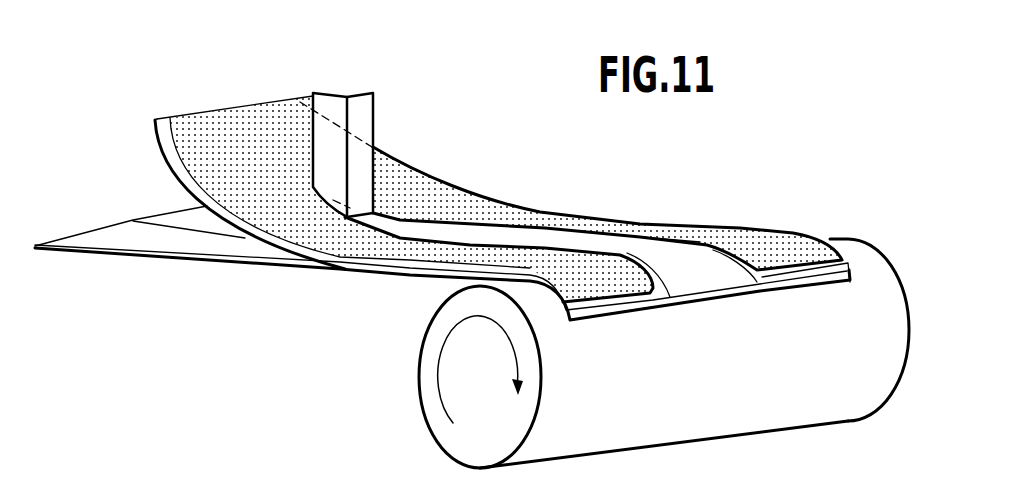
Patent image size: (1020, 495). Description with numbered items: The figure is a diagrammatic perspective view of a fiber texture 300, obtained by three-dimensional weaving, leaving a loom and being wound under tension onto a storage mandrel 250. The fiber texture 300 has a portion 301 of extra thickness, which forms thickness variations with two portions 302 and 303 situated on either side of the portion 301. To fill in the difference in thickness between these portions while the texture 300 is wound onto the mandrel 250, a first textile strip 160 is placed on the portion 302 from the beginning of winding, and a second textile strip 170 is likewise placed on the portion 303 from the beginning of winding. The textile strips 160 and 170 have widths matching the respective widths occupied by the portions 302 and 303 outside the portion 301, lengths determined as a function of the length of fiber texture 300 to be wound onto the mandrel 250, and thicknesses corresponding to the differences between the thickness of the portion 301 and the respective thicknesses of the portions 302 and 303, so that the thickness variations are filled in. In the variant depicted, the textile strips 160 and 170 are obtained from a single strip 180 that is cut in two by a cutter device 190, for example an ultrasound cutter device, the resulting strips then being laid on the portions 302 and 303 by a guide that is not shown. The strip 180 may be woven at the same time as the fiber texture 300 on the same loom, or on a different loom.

The first textile strip 160 is at (592, 268).
The second textile strip 170 is at (777, 250).
The single strip 180 is at (247, 130).
The cutter device 190 is at (353, 96).
The storage mandrel 250 is at (776, 404).
The fiber texture 300 is at (453, 266).
The portion of extra thickness 301 is at (670, 258).
The portion of the fiber texture 302 is at (612, 307).
The portion of the fiber texture 303 is at (789, 281).